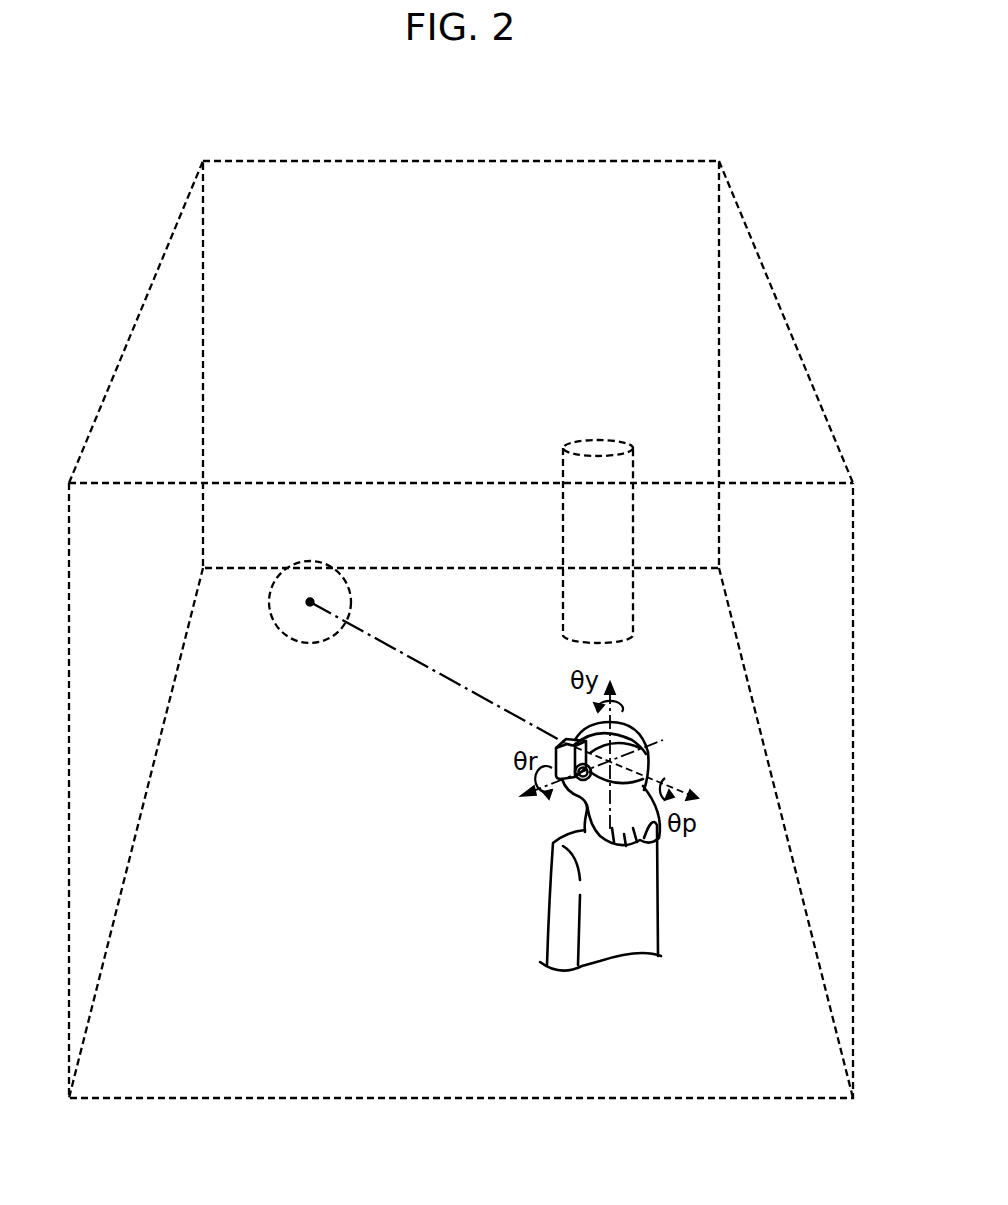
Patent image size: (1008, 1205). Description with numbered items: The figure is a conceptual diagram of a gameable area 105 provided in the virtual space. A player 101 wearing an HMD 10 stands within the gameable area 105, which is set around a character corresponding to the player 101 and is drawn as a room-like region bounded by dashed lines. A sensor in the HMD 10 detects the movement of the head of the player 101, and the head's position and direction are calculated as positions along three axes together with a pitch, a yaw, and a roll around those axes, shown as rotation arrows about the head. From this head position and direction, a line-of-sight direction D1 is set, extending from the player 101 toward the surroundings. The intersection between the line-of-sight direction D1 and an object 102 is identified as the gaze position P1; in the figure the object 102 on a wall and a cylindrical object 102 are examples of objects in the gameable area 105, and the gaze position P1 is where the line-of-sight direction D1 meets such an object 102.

The gameable area 105 is at (645, 161).
The object 102 is at (563, 511).
The HMD 10 is at (572, 741).
The player 101 is at (659, 891).
The gaze position P1 is at (310, 597).
The line-of-sight direction D1 is at (405, 655).